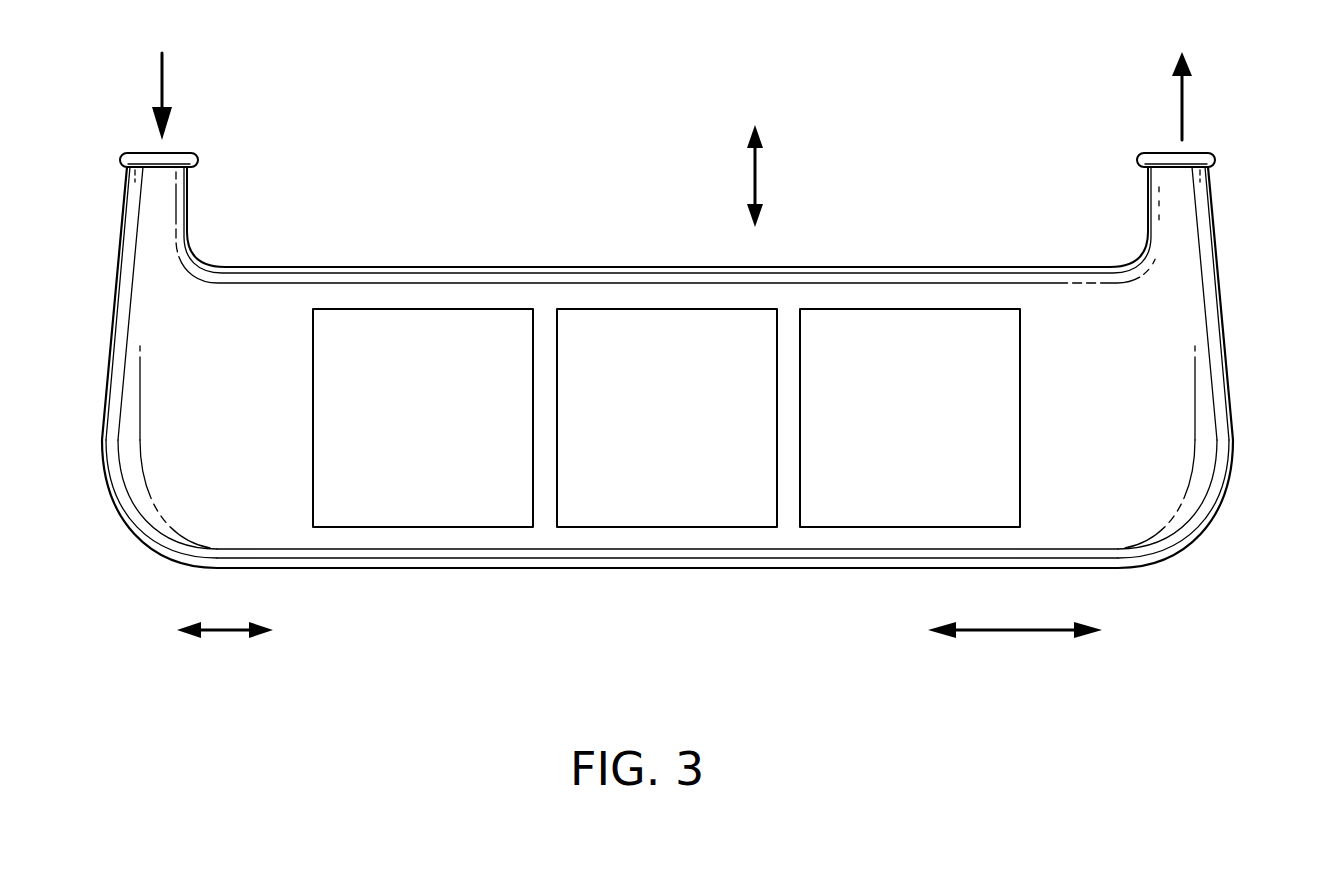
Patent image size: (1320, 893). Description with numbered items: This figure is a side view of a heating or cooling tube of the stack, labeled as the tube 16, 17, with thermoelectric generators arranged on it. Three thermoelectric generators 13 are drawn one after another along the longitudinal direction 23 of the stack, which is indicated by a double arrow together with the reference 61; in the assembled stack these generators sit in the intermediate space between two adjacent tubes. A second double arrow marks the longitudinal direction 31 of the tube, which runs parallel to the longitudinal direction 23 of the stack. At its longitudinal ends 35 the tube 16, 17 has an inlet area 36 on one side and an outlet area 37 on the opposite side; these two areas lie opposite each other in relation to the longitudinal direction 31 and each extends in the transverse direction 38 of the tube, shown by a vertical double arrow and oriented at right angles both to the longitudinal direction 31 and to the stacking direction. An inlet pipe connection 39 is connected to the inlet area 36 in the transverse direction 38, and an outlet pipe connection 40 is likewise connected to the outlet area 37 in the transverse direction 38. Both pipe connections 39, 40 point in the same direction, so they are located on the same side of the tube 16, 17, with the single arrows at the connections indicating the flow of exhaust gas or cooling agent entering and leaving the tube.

The thermoelectric generator 13 is at (478, 503).
The tube 16 is at (678, 374).
The tube 17 is at (678, 374).
The longitudinal direction of the stack 23 is at (1023, 650).
The longitudinal direction of the tube 31 is at (223, 632).
The longitudinal ends 35 is at (103, 480).
The inlet area 36 is at (242, 445).
The outlet area 37 is at (1183, 422).
The transverse direction of the tube 38 is at (757, 172).
The inlet pipe connection 39 is at (190, 182).
The outlet pipe connection 40 is at (1145, 190).
The lateral direction 61 is at (1017, 632).